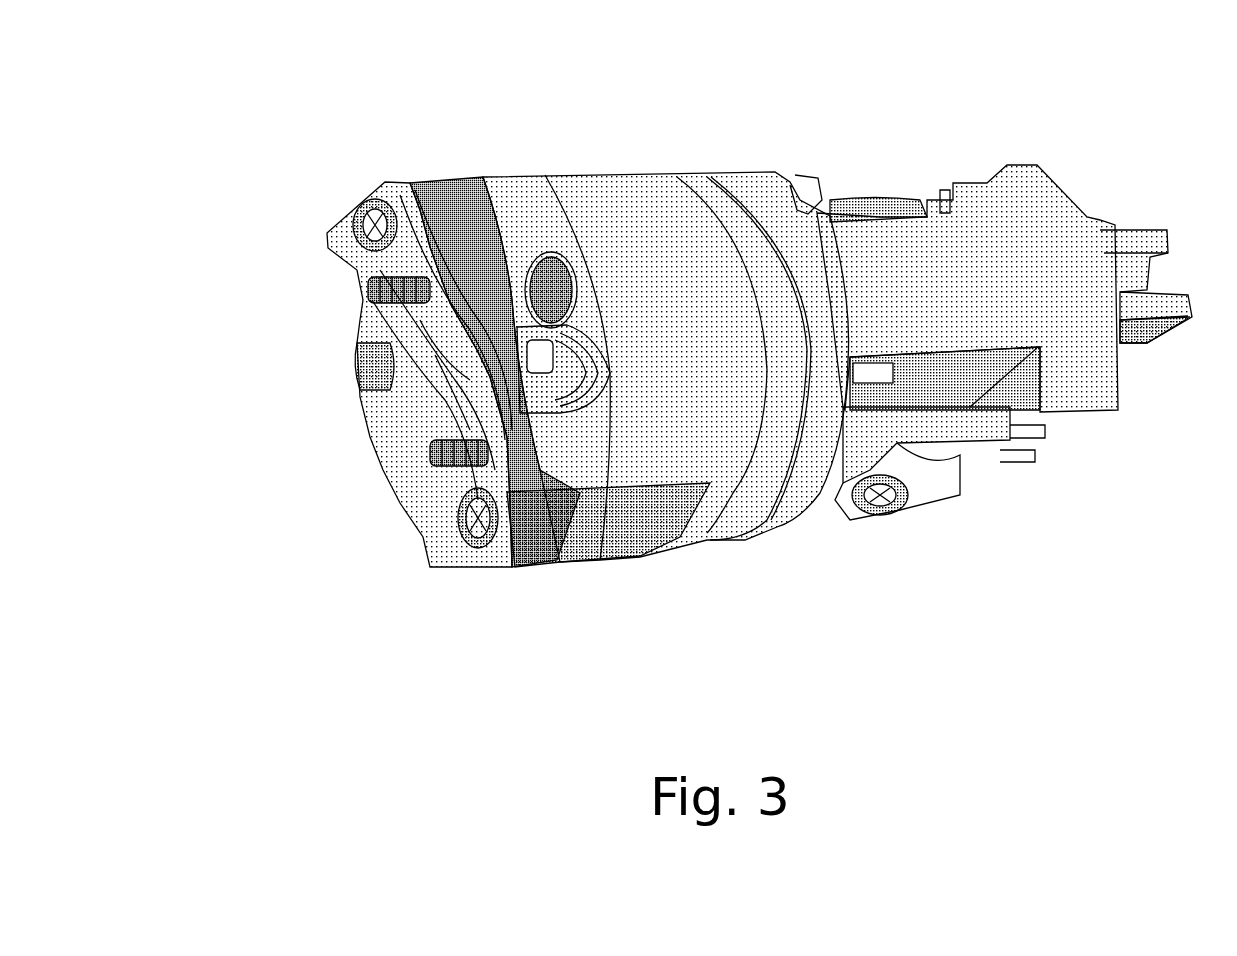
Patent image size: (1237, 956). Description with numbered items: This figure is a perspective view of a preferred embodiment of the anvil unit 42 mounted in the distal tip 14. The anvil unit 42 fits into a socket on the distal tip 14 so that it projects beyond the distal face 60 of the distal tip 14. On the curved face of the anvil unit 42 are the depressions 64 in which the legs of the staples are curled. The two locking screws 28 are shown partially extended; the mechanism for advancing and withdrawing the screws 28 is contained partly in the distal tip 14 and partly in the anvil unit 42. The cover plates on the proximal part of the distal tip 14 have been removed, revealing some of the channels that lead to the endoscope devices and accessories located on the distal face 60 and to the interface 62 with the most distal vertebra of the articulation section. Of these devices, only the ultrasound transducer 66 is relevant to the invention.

The distal tip 14 is at (848, 173).
The locking screws 28 is at (362, 290).
The anvil unit 42 is at (497, 553).
The distal face 60 is at (505, 207).
The interface 62 is at (1153, 340).
The depressions 64 is at (365, 346).
The ultrasound transducer 66 is at (545, 363).